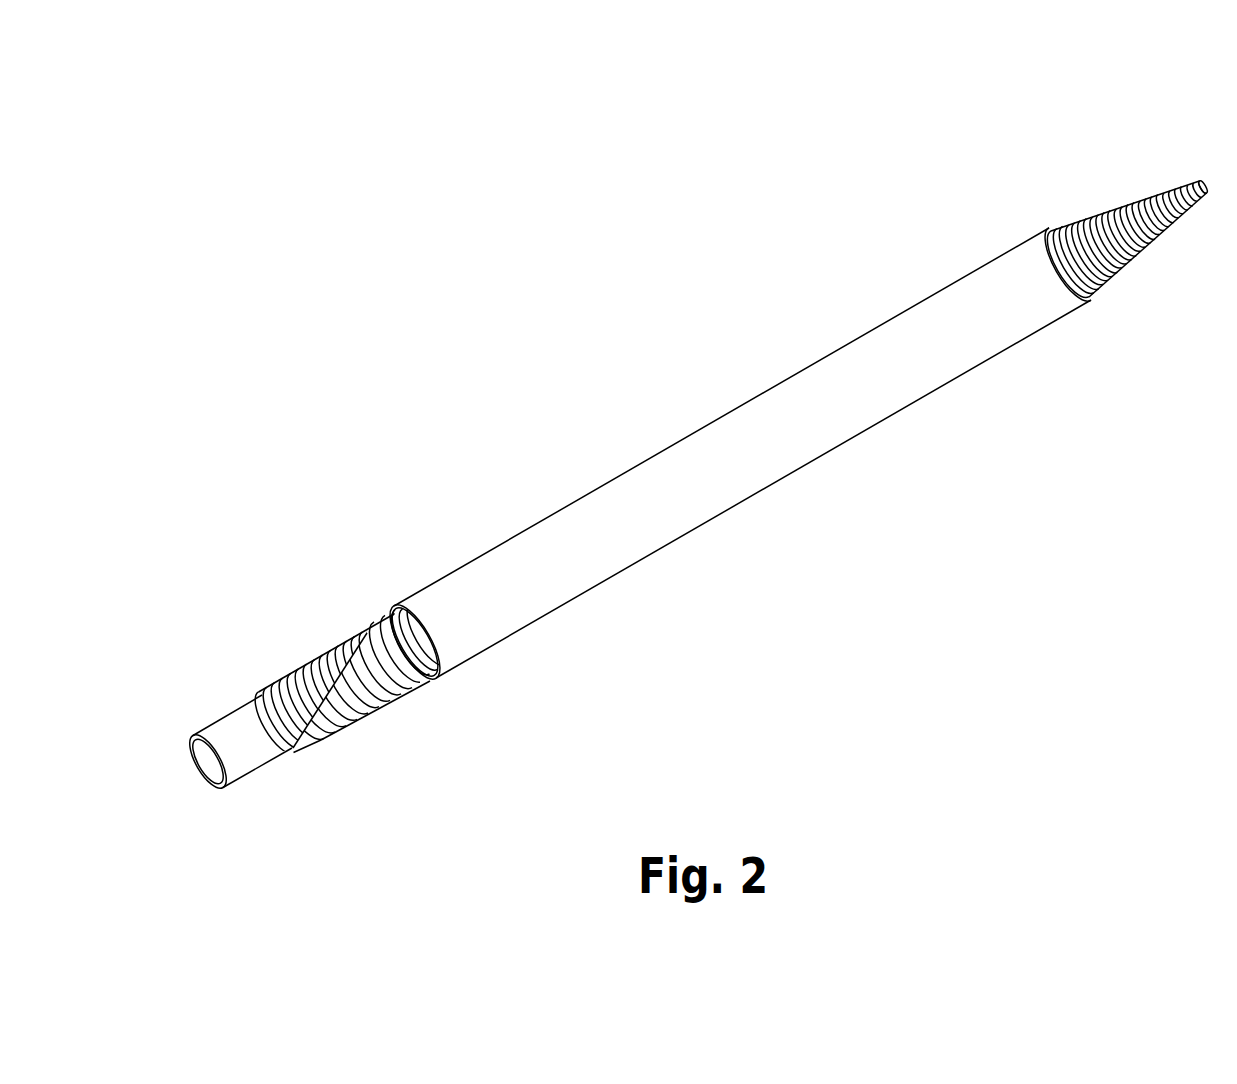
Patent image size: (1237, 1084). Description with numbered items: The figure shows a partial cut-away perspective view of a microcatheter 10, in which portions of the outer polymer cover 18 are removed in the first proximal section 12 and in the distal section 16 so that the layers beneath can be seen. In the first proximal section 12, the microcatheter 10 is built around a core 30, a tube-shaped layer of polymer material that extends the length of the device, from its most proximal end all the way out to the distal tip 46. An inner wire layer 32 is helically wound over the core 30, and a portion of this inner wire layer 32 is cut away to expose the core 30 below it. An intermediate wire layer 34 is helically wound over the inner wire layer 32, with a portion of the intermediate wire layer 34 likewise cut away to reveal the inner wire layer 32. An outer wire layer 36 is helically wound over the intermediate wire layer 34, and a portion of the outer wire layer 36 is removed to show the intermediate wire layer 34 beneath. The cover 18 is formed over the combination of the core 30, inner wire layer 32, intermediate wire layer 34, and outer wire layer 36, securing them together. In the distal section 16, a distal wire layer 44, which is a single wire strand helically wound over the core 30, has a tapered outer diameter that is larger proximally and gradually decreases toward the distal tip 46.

The microcatheter 10 is at (699, 473).
The first proximal section 12 is at (314, 694).
The distal section 16 is at (1109, 199).
The cover 18 is at (409, 585).
The core 30 is at (252, 785).
The inner wire layer 32 is at (277, 681).
The intermediate wire layer 34 is at (341, 740).
The outer wire layer 36 is at (350, 627).
The distal wire layer 44 is at (1106, 210).
The distal tip 46 is at (1203, 182).